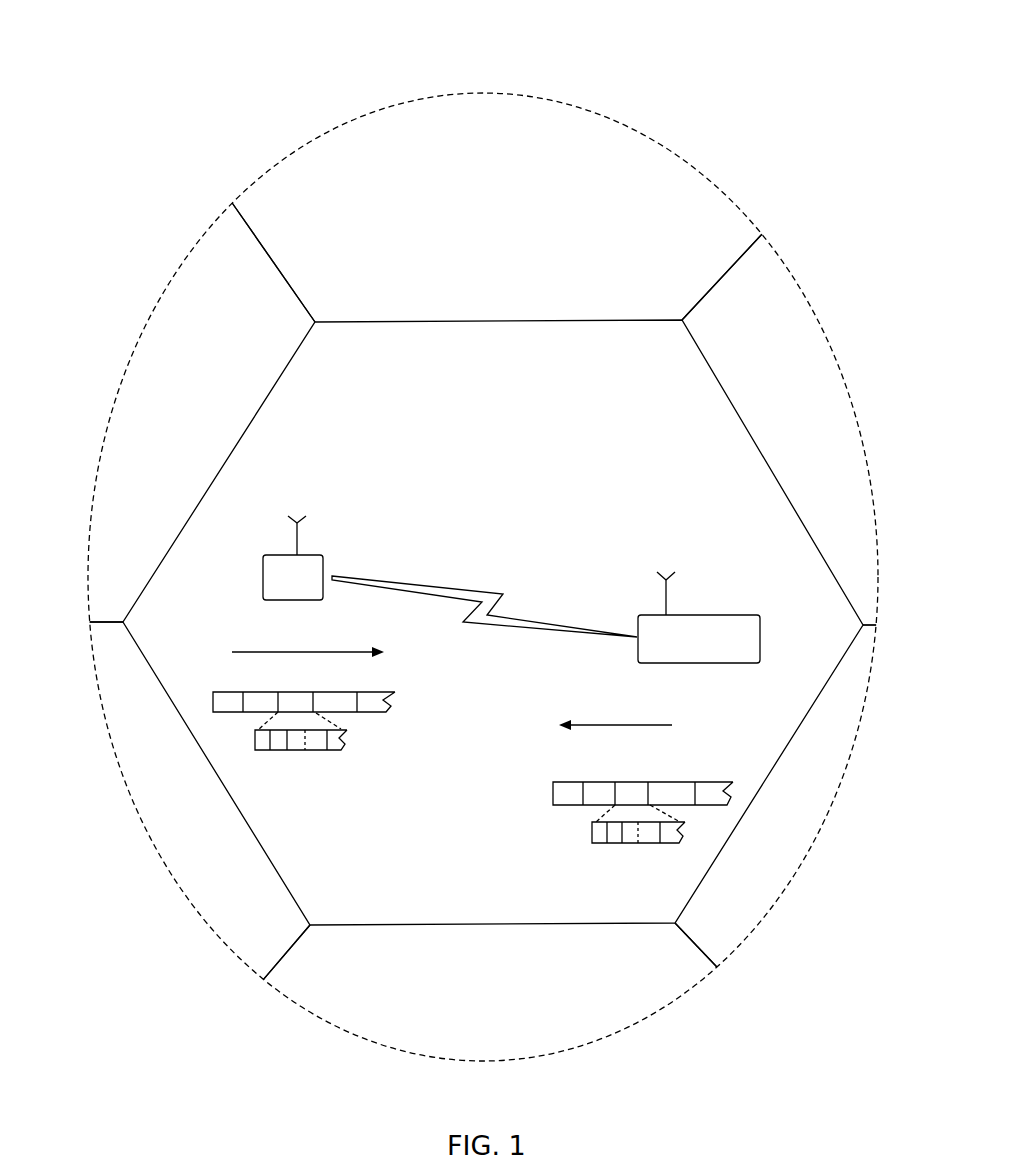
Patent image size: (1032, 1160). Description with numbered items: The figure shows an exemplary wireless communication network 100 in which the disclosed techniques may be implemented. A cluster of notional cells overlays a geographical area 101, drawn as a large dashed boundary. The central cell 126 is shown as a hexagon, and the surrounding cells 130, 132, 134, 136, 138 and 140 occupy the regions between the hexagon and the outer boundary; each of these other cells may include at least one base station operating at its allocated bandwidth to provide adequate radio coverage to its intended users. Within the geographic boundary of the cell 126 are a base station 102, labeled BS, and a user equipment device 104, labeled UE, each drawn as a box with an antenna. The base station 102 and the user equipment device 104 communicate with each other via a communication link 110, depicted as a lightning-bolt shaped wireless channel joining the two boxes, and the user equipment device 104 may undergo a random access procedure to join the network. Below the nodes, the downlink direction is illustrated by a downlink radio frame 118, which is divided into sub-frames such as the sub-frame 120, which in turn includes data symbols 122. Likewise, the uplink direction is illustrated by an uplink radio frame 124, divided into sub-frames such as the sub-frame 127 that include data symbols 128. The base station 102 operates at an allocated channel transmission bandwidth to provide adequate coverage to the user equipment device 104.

The wireless communication network 100 is at (437, 48).
The geographical area 101 is at (645, 122).
The base station 102 is at (262, 570).
The user equipment device 104 is at (727, 615).
The communication link 110 is at (482, 583).
The downlink radio frame 118 is at (213, 703).
The downlink sub-frame 120 is at (255, 742).
The downlink data symbol 122 is at (313, 740).
The uplink radio frame 124 is at (702, 777).
The cell 126 is at (353, 387).
The uplink sub-frame 127 is at (592, 831).
The uplink data symbol 128 is at (648, 830).
The cell 130 is at (188, 280).
The cell 132 is at (332, 153).
The cell 134 is at (783, 307).
The cell 136 is at (747, 905).
The cell 138 is at (357, 1000).
The cell 140 is at (185, 860).